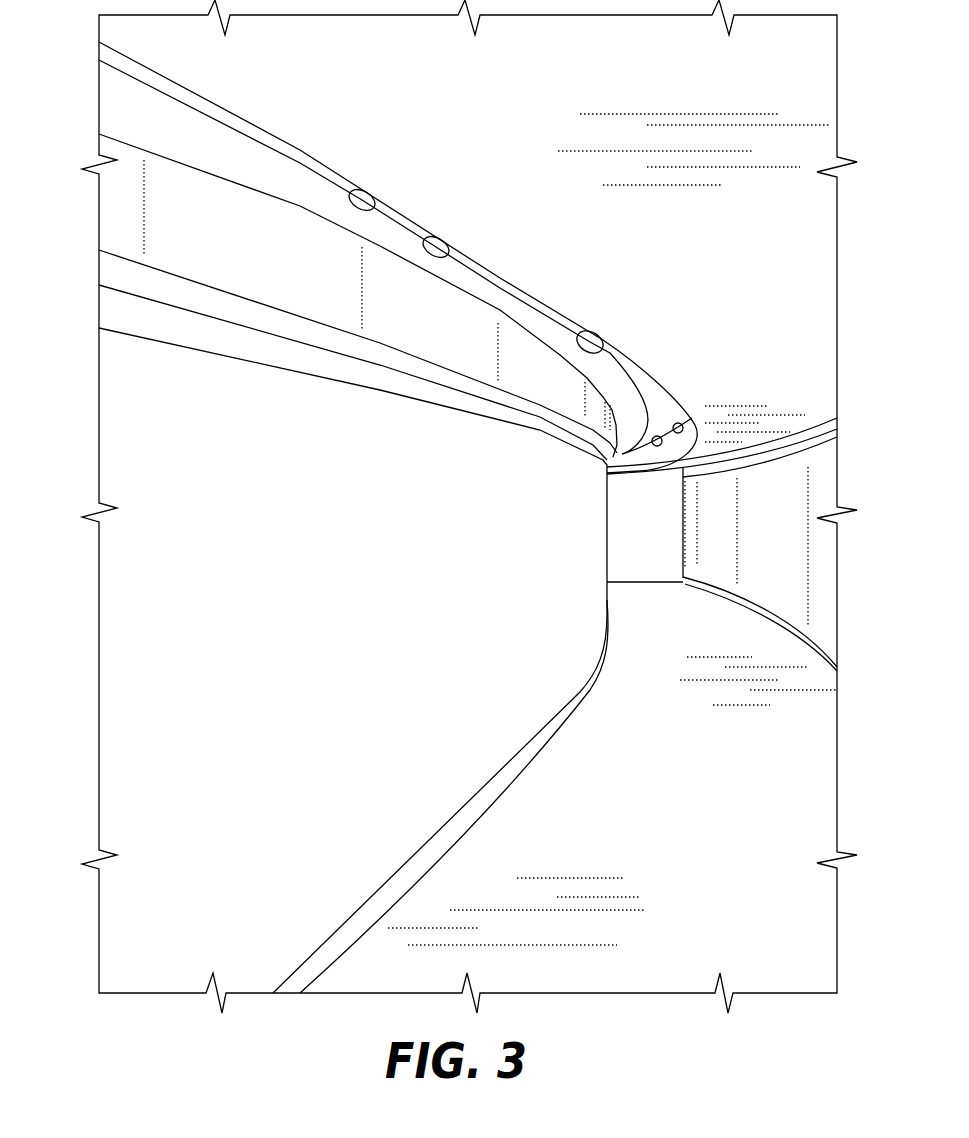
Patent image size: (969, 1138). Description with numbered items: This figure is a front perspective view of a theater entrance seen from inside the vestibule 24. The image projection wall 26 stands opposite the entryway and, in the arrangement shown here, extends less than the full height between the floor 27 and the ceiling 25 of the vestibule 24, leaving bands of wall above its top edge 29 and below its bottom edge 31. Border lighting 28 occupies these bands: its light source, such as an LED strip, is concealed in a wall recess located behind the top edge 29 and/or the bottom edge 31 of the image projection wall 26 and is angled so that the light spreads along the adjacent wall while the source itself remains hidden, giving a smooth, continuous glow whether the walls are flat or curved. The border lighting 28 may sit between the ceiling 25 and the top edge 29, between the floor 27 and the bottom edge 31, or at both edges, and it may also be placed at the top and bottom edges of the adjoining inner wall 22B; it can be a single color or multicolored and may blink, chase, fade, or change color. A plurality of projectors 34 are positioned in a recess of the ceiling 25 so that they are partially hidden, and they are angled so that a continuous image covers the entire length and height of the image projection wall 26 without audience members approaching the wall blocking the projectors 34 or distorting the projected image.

The inner wall 22B is at (781, 553).
The vestibule 24 is at (739, 813).
The ceiling 25 is at (694, 278).
The image projection wall 26 is at (349, 613).
The floor 27 is at (739, 706).
The border lighting 28 is at (133, 316).
The top edge 29 is at (389, 391).
The bottom edge 31 is at (458, 819).
The projectors 34 is at (611, 332).